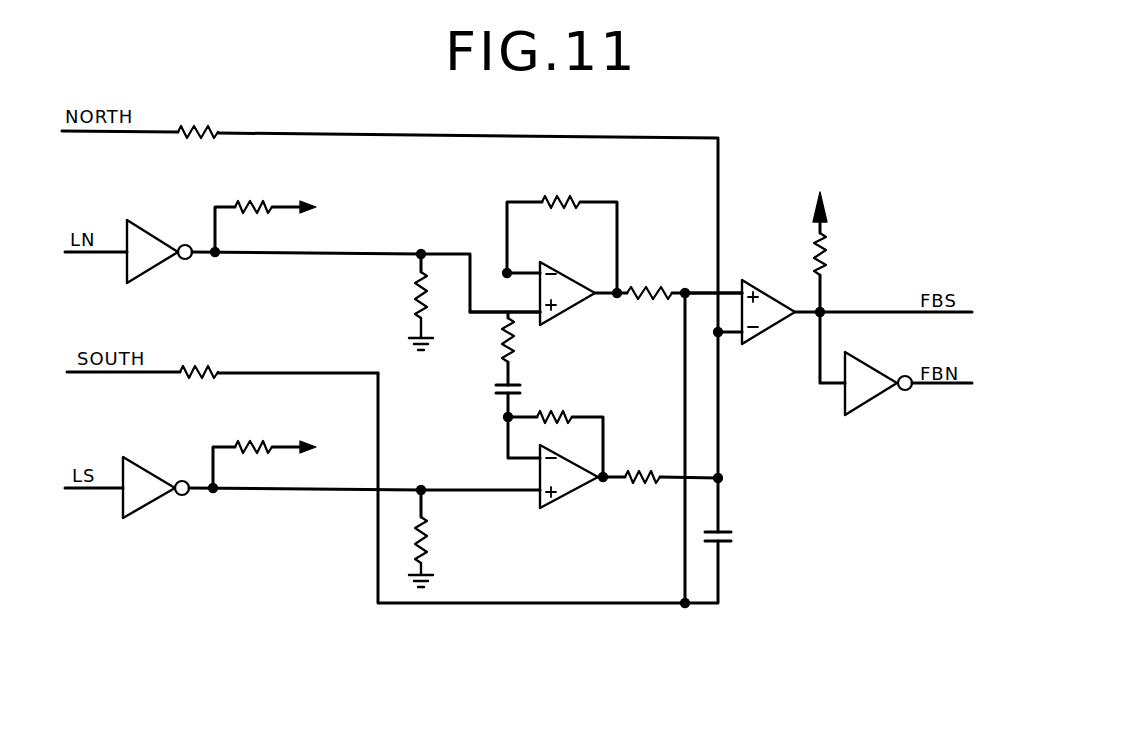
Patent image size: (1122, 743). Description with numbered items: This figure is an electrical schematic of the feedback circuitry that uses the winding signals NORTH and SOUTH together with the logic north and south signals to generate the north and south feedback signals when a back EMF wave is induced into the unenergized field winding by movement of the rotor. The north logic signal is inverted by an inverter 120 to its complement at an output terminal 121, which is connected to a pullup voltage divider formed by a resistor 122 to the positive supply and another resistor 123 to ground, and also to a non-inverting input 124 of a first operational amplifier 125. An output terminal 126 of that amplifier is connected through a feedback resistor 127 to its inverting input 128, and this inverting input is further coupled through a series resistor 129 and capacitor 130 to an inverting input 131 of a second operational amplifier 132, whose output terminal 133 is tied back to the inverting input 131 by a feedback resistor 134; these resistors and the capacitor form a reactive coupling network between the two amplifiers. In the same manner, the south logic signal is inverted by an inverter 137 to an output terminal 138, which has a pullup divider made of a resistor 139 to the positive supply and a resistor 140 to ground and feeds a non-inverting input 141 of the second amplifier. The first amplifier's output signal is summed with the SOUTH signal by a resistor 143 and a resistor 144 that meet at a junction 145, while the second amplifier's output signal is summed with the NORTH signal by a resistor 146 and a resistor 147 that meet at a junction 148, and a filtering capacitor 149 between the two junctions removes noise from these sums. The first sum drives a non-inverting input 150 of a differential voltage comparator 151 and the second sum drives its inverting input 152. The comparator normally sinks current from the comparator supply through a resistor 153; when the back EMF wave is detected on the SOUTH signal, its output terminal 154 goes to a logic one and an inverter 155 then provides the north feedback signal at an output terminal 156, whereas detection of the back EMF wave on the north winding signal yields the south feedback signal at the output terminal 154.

The inverter 120 is at (148, 226).
The output terminal 121 is at (203, 258).
The resistor 122 is at (258, 203).
The resistor 123 is at (412, 299).
The non-inverting input 124 is at (528, 318).
The first operational amplifier 125 is at (572, 310).
The output terminal 126 is at (604, 289).
The feedback resistor 127 is at (565, 197).
The inverting input 128 is at (518, 270).
The resistor 129 is at (503, 345).
The capacitor 130 is at (500, 401).
The inverting input 131 is at (520, 464).
The second operational amplifier 132 is at (570, 490).
The output terminal 133 is at (598, 484).
The feedback resistor 134 is at (560, 412).
The inverter 137 is at (146, 506).
The output terminal 138 is at (203, 494).
The resistor 139 is at (258, 442).
The resistor 140 is at (428, 545).
The non-inverting input 141 is at (524, 497).
The resistor 143 is at (645, 281).
The resistor 144 is at (215, 378).
The junction 145 is at (690, 610).
The resistor 146 is at (630, 472).
The resistor 147 is at (213, 124).
The junction 148 is at (724, 478).
The filtering capacitor 149 is at (722, 530).
The non-inverting input 150 is at (730, 290).
The differential voltage comparator 151 is at (771, 303).
The inverting input 152 is at (730, 336).
The resistor 153 is at (830, 263).
The output terminal 154 is at (802, 318).
The inverter 155 is at (866, 392).
The output terminal 156 is at (941, 386).